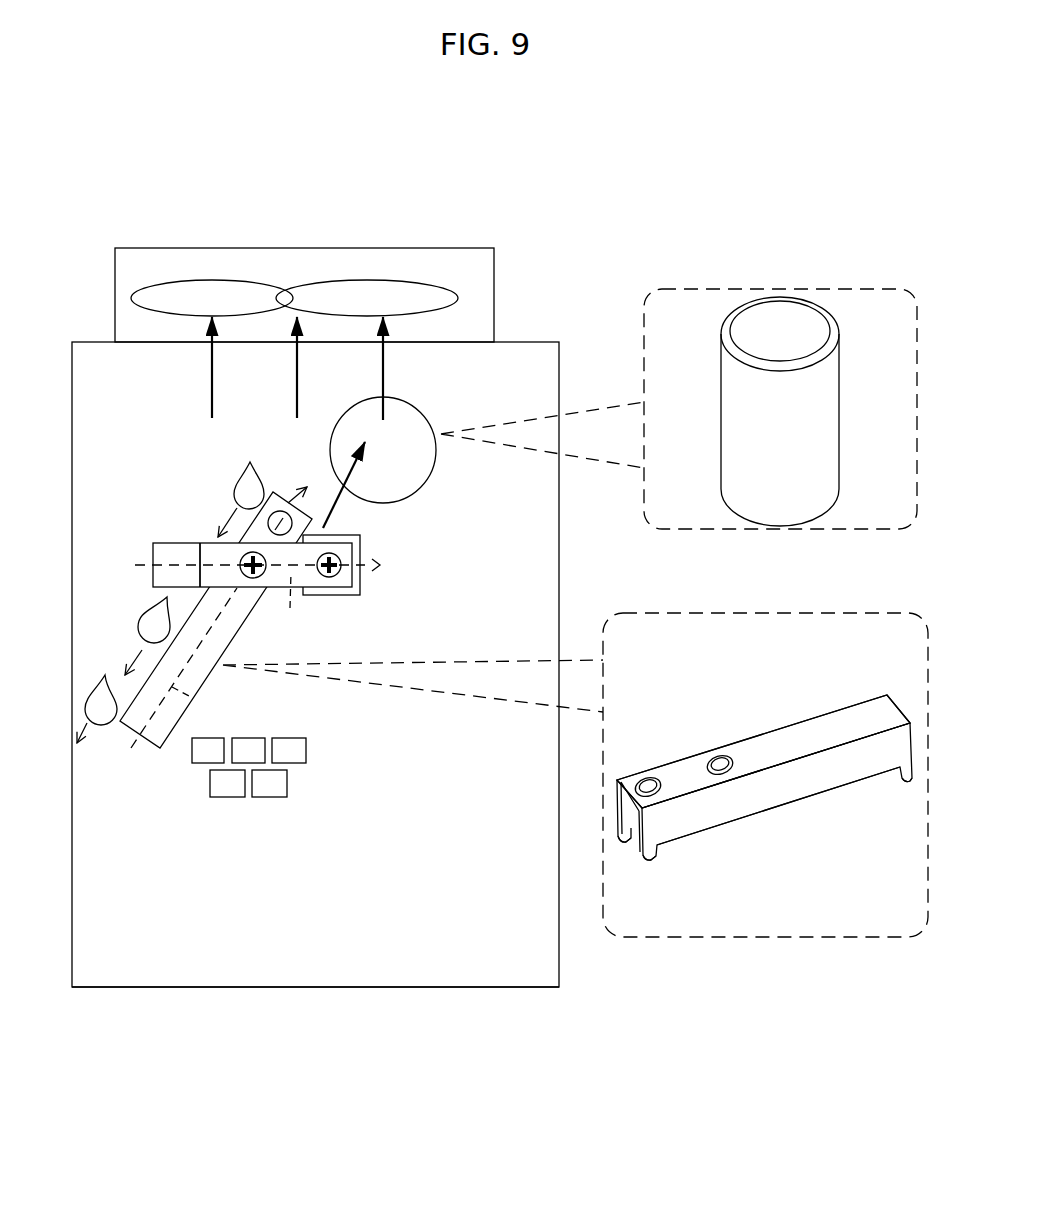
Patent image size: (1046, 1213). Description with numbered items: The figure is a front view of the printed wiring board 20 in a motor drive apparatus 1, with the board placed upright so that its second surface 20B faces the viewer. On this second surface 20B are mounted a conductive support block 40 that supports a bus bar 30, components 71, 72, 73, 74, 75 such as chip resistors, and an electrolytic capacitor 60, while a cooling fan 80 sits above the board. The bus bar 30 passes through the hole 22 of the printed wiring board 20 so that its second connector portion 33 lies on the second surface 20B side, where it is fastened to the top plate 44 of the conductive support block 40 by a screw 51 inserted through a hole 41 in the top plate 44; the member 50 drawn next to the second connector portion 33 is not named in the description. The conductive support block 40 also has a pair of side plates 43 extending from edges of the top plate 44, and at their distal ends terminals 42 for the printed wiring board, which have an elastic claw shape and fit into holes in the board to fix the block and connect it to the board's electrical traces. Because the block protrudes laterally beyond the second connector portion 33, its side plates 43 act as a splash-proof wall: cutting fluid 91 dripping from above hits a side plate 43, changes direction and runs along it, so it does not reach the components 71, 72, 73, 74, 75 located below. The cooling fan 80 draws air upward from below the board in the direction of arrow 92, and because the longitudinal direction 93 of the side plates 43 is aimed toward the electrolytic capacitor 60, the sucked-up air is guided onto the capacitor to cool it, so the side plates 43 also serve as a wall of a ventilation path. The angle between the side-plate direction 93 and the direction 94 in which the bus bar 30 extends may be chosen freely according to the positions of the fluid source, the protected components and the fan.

The motor drive apparatus 1 is at (573, 186).
The printed wiring board 20 is at (305, 990).
The second surface 20B is at (405, 953).
The hole 22 is at (362, 548).
The bus bar 30 is at (165, 545).
The second connector portion 33 is at (212, 556).
The conductive support block 40 is at (233, 640).
The hole 41 is at (278, 494).
The terminals for the printed wiring board 42 is at (912, 782).
The side plates 43 is at (837, 778).
The top plate 44 is at (778, 745).
The fixing member 50 is at (335, 545).
The screw 51 is at (247, 556).
The electrolytic capacitor 60 is at (432, 421).
The component 71 is at (225, 797).
The component 72 is at (270, 797).
The component 73 is at (306, 750).
The component 74 is at (248, 738).
The component 75 is at (192, 752).
The cooling fan 80 is at (401, 248).
The cutting fluid 91 is at (240, 476).
The arrow 92 is at (211, 378).
The direction along the side plate 93 is at (193, 698).
The direction in which the bus bar extends 94 is at (290, 607).